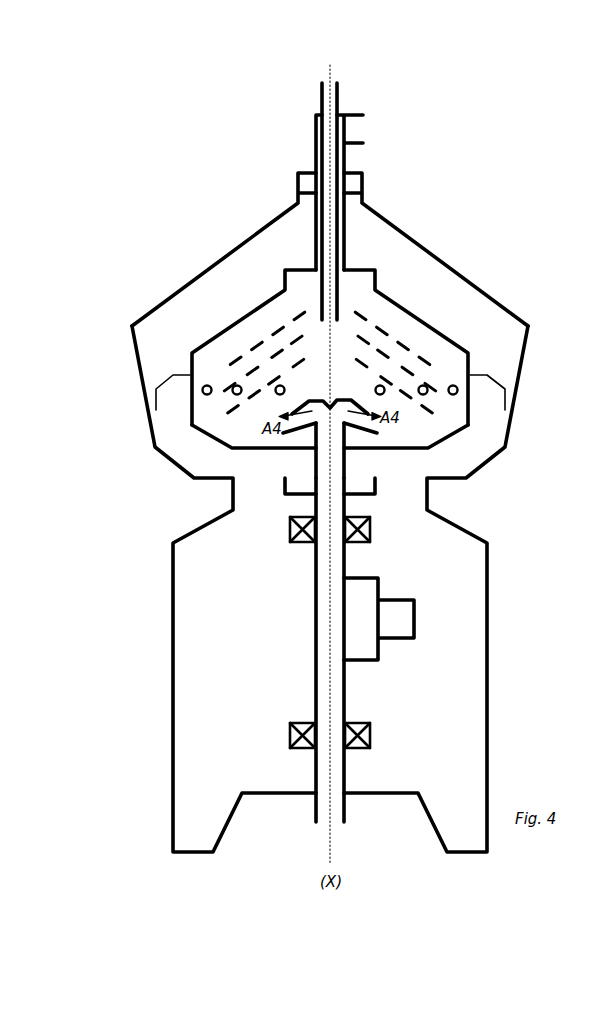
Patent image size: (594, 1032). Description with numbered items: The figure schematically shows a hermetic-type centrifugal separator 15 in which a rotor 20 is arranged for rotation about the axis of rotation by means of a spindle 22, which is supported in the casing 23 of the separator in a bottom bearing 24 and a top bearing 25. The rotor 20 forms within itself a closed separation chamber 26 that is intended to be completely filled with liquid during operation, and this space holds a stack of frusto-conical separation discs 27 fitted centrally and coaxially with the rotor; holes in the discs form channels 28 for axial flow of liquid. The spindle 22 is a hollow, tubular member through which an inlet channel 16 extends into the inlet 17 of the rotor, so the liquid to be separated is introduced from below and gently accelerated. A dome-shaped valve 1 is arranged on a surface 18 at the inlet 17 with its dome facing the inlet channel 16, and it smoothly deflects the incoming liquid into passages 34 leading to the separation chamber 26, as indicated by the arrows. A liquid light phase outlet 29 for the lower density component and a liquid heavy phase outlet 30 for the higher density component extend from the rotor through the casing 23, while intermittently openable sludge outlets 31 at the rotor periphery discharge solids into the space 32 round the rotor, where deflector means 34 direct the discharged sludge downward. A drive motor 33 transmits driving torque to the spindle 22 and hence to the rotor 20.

The valve 1 is at (392, 428).
The centrifugal separator 15 is at (173, 207).
The inlet channel 16 is at (300, 414).
The inlet 17 is at (316, 438).
The surface 18 is at (331, 403).
The rotor 20 is at (432, 330).
The spindle 22 is at (317, 627).
The casing 23 is at (526, 322).
The bottom bearing 24 is at (288, 528).
The top bearing 25 is at (288, 738).
The separation chamber 26 is at (277, 384).
The separation discs 27 is at (224, 363).
The channels 28 is at (262, 327).
The liquid light phase outlet 29 is at (322, 92).
The liquid heavy phase outlet 30 is at (353, 132).
The sludge outlets 31 is at (155, 445).
The space round the rotor 32 is at (193, 453).
The drive motor 33 is at (352, 597).
The deflector means 34 is at (155, 395).